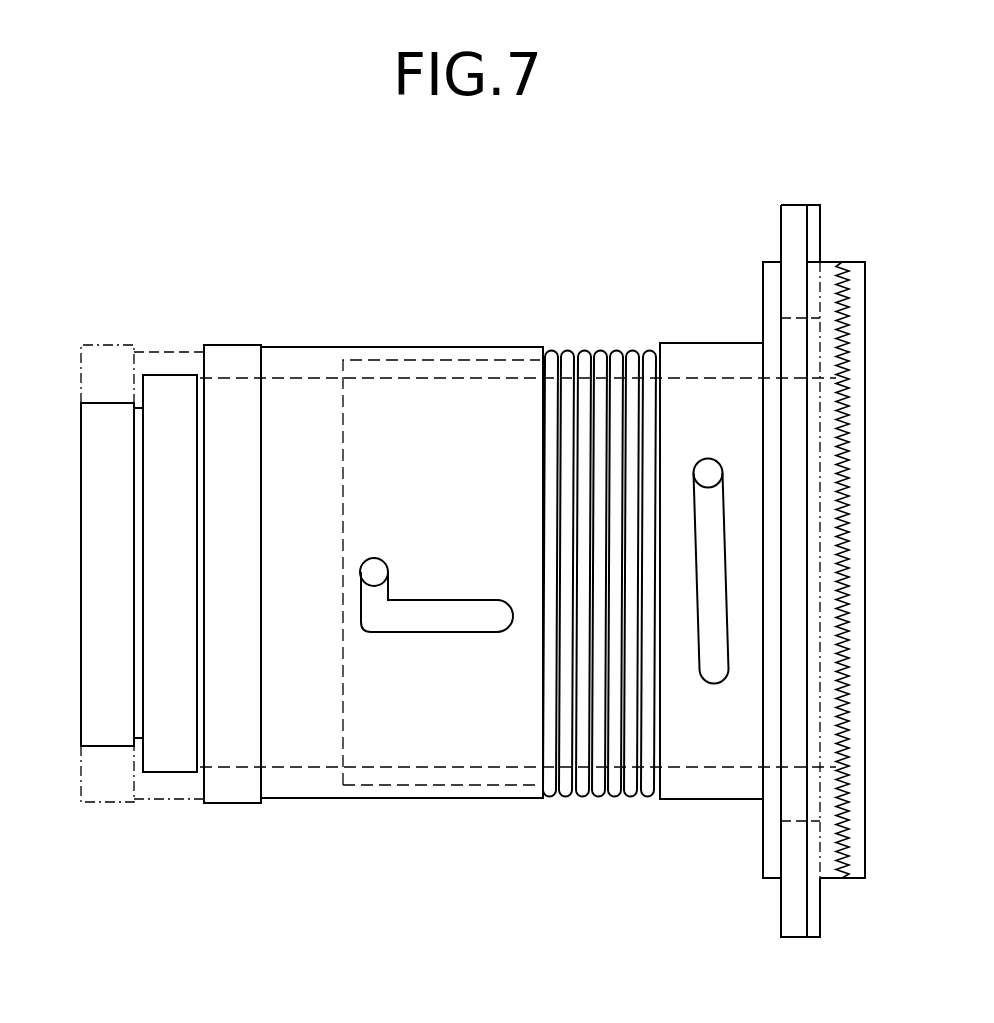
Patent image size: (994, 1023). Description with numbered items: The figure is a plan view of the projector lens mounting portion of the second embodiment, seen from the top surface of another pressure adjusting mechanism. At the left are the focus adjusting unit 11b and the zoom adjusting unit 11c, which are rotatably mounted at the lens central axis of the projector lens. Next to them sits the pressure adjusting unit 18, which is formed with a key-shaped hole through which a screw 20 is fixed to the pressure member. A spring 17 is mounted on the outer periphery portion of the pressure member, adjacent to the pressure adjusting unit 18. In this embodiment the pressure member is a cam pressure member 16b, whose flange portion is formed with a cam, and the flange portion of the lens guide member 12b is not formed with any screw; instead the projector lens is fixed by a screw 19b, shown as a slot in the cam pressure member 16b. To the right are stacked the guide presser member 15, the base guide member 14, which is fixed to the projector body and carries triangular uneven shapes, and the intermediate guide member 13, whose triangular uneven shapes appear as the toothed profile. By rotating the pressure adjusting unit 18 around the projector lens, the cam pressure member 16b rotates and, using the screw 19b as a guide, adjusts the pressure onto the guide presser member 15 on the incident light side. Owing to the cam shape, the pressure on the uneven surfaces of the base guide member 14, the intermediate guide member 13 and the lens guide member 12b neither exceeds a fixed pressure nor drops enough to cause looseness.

The focus adjusting unit 11b is at (103, 410).
The zoom adjusting unit 11c is at (176, 388).
The pressure adjusting unit 18 is at (430, 390).
The screw 20 is at (386, 561).
The spring 17 is at (570, 350).
The cam pressure member 16b is at (672, 345).
The screw 19b is at (708, 459).
The guide presser member 15 is at (768, 838).
The base guide member 14 is at (787, 905).
The lens guide member 12b is at (858, 384).
The intermediate guide member 13 is at (828, 310).